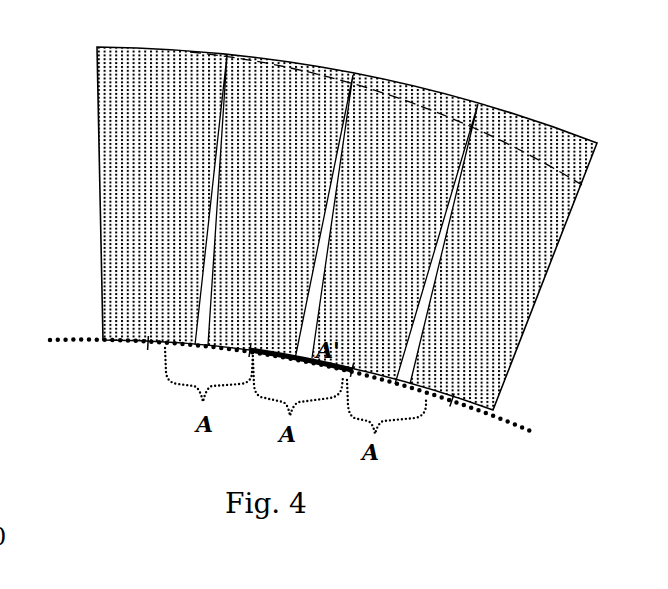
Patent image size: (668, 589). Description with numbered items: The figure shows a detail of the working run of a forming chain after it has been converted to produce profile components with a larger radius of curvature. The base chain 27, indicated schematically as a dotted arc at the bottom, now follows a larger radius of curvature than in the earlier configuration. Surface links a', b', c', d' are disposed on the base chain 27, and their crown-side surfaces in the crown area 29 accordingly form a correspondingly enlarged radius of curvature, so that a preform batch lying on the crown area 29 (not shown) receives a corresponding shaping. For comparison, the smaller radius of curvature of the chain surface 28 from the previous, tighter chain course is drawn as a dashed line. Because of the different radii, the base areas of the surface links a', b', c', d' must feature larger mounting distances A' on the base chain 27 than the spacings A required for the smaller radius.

The base chain 27 is at (512, 423).
The chain surface 28 is at (510, 148).
The crown area 29 is at (420, 74).